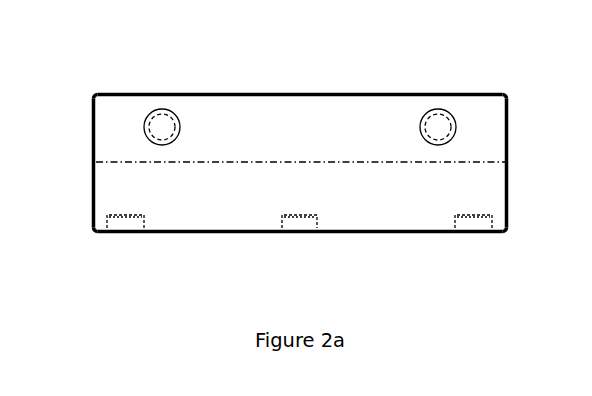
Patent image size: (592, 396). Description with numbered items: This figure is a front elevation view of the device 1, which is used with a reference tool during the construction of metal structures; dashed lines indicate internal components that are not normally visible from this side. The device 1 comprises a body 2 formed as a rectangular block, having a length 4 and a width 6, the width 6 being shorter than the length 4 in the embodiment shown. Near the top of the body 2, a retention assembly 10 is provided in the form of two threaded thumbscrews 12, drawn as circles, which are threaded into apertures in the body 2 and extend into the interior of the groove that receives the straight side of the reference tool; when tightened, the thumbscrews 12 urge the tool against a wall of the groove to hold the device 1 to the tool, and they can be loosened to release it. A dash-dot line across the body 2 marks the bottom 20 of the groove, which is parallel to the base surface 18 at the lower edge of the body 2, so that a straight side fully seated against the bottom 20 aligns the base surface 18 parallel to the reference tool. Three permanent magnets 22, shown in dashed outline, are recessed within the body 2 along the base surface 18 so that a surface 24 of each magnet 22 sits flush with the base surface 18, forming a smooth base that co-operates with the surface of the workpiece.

The device 1 is at (308, 166).
The body 2 is at (298, 183).
The length 4 is at (383, 93).
The width 6 is at (92, 135).
The retention assembly 10 is at (175, 118).
The threaded thumbscrew 12 is at (162, 125).
The base surface 18 is at (390, 230).
The bottom of groove 20 is at (492, 162).
The permanent magnet 22 is at (113, 223).
The surface of magnet 24 is at (135, 232).